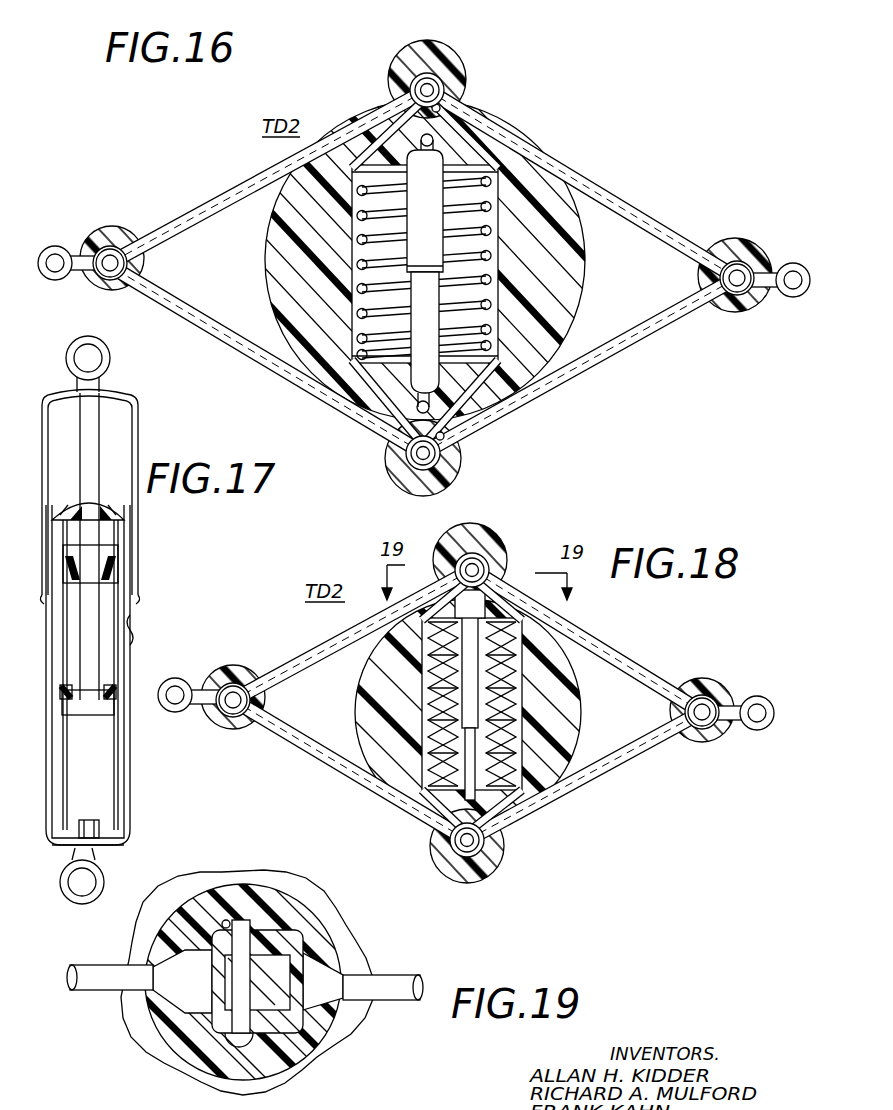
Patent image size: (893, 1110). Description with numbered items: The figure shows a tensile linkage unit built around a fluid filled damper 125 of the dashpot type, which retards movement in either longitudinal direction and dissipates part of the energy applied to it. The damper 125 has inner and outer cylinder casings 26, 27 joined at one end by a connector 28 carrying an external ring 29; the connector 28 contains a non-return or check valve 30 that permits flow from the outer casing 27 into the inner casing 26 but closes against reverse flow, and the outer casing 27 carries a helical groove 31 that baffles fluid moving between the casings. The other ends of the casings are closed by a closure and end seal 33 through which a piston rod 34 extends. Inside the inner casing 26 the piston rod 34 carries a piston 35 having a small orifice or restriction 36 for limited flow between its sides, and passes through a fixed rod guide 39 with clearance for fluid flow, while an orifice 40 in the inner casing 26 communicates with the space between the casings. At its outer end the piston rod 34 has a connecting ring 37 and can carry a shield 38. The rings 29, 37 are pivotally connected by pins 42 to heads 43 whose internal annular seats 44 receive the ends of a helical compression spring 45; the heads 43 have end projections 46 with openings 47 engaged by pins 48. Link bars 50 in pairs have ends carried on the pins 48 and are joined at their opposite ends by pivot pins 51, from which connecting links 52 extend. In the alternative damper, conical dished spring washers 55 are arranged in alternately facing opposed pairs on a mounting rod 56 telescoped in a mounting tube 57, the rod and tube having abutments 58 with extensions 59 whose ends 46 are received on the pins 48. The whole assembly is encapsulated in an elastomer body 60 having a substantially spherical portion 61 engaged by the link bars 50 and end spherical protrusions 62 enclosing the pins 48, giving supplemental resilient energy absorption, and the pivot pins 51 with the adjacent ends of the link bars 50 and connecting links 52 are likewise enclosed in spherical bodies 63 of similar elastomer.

In FIG. 17, the inner cylinder casing 26 is at (119, 612).
In FIG. 16, the outer cylinder casing 27 is at (438, 366).
In FIG. 17, the outer cylinder casing 27 is at (130, 665).
In FIG. 17, the connector 28 is at (96, 850).
In FIG. 17, the external ring 29 is at (103, 878).
In FIG. 17, the non-return or check valve 30 is at (88, 826).
In FIG. 17, the helical groove 31 is at (126, 630).
In FIG. 17, the closure and end seal 33 is at (100, 510).
In FIG. 17, the piston rod 34 is at (92, 420).
In FIG. 17, the piston 35 is at (104, 712).
In FIG. 17, the orifice or restriction 36 is at (103, 692).
In FIG. 17, the connecting ring 37 is at (108, 360).
In FIG. 16, the shield 38 is at (440, 236).
In FIG. 17, the shield 38 is at (138, 420).
In FIG. 17, the fixed rod guide 39 is at (110, 578).
In FIG. 17, the orifice 40 is at (58, 540).
In FIG. 16, the pins 42 is at (440, 118).
In FIG. 16, the heads 43 is at (465, 150).
In FIG. 16, the internal annular seats 44 is at (487, 183).
In FIG. 16, the helical compression spring 45 is at (578, 246).
In FIG. 16, the end projections 46 is at (438, 108).
In FIG. 19, the end projections 46 is at (262, 1036).
In FIG. 19, the openings 47 is at (256, 975).
In FIG. 16, the pins 48 is at (430, 88).
In FIG. 18, the pins 48 is at (475, 566).
In FIG. 19, the pins 48 is at (250, 938).
In FIG. 16, the link bars 50 is at (240, 190).
In FIG. 18, the link bars 50 is at (335, 640).
In FIG. 19, the link bars 50 is at (100, 966).
In FIG. 16, the pivot pins 51 is at (110, 255).
In FIG. 18, the pivot pins 51 is at (233, 708).
In FIG. 16, the connecting links 52 is at (58, 246).
In FIG. 18, the connecting links 52 is at (187, 706).
In FIG. 18, the conical dished spring washers 55 is at (520, 682).
In FIG. 18, the mounting rod 56 is at (480, 618).
In FIG. 18, the mounting tube 57 is at (488, 733).
In FIG. 18, the abutments 58 is at (490, 586).
In FIG. 18, the extensions 59 is at (466, 592).
In FIG. 16, the elastomer body 60 is at (573, 282).
In FIG. 18, the elastomer body 60 is at (578, 709).
In FIG. 16, the spherical portion 61 is at (270, 234).
In FIG. 18, the spherical portion 61 is at (360, 701).
In FIG. 16, the end spherical protrusions 62 is at (410, 60).
In FIG. 18, the end spherical protrusions 62 is at (460, 545).
In FIG. 16, the spherical bodies 63 is at (133, 240).
In FIG. 18, the spherical bodies 63 is at (252, 664).
In FIG. 16, the fluid filled damper 125 is at (440, 302).
In FIG. 17, the fluid filled damper 125 is at (170, 551).